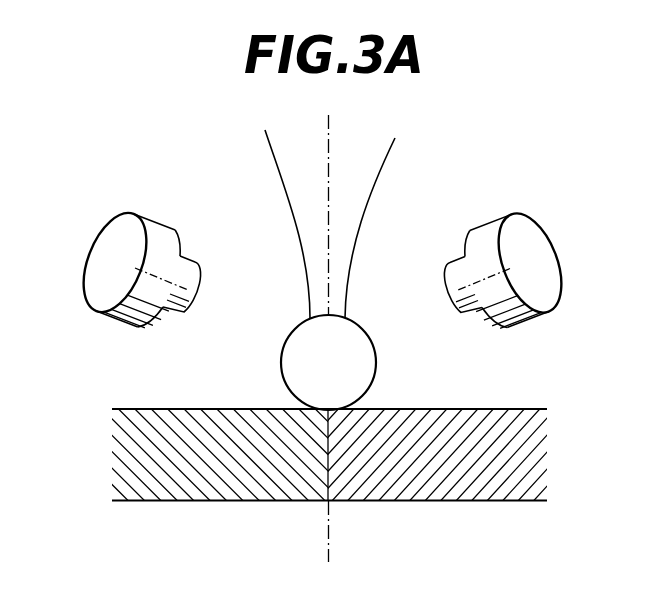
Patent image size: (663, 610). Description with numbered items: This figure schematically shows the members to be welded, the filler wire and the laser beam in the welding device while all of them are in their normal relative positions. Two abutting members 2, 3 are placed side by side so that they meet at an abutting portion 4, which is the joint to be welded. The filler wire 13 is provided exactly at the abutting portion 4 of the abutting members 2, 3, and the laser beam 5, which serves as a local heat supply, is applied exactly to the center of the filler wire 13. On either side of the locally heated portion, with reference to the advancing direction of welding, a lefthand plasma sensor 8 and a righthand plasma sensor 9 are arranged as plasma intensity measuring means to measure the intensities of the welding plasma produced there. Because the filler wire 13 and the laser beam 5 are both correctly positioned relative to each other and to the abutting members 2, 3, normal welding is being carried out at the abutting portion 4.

The abutting member 2 is at (130, 447).
The abutting member 3 is at (500, 447).
The abutting portion 4 is at (328, 452).
The laser beam 5 is at (287, 197).
The lefthand plasma sensor 8 is at (110, 237).
The righthand plasma sensor 9 is at (537, 252).
The filler wire 13 is at (377, 361).